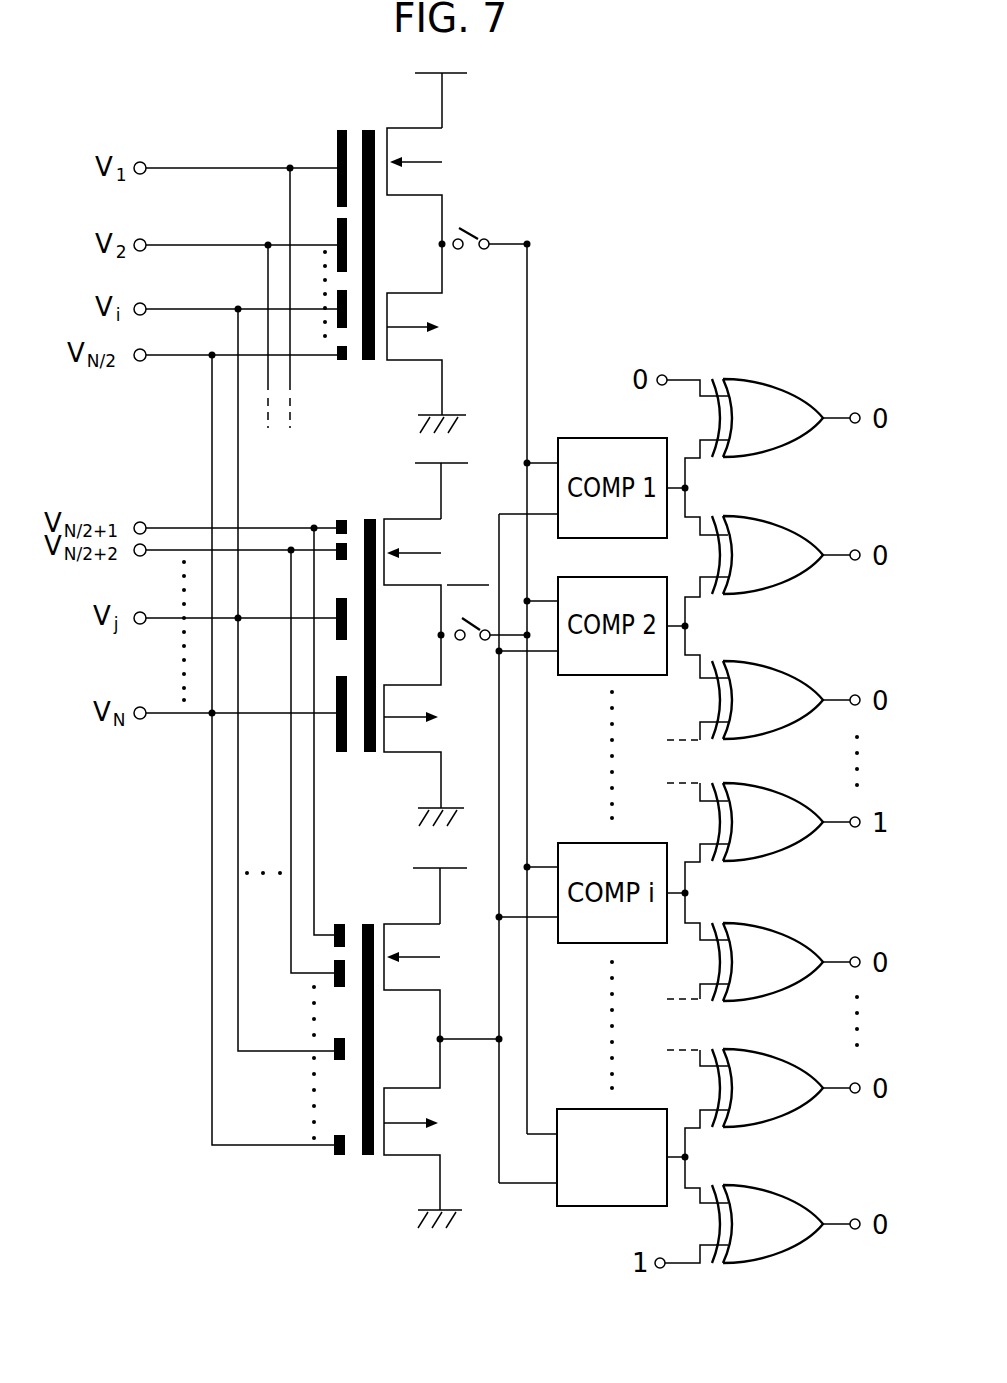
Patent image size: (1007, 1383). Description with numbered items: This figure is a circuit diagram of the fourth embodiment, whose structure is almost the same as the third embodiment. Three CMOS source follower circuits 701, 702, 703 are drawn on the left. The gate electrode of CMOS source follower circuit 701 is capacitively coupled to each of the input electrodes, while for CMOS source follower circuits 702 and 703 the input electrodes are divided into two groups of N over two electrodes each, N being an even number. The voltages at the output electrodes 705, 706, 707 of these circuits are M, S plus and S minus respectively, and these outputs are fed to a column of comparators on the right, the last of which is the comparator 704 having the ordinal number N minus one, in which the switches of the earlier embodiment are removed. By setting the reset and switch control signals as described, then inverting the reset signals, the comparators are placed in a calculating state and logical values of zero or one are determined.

The CMOS source follower circuit 701 is at (396, 1163).
The CMOS source follower circuit 702 is at (398, 758).
The CMOS source follower circuit 703 is at (398, 370).
The comparator 704 is at (567, 1108).
The output electrode 705 is at (470, 1026).
The output electrode 706 is at (440, 633).
The output electrode 707 is at (445, 248).